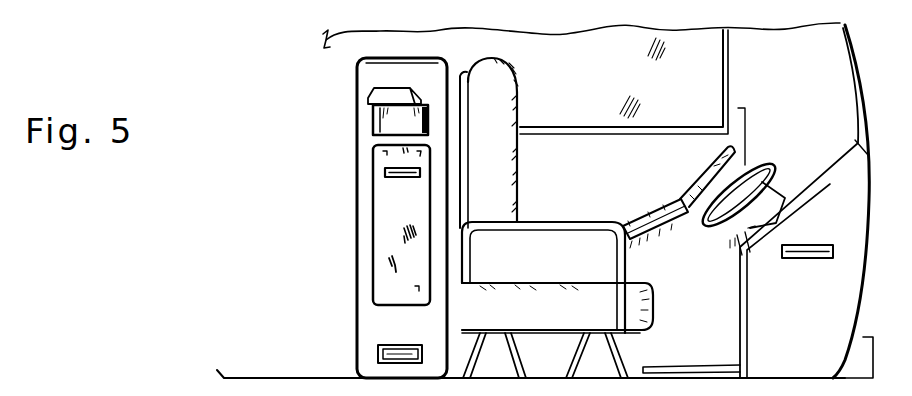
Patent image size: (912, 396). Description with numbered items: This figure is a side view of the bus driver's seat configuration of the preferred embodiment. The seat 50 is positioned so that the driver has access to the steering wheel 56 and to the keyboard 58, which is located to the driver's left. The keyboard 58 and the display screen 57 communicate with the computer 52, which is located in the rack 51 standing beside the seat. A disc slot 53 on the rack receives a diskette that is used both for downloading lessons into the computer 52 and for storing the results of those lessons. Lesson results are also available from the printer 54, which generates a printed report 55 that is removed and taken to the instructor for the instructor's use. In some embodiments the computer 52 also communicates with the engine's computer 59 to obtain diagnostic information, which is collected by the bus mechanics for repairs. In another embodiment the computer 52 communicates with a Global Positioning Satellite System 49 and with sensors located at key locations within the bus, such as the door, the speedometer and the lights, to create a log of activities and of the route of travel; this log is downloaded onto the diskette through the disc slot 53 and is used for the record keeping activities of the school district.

The Global Positioning Satellite System 49 is at (378, 353).
The seat 50 is at (533, 80).
The rack 51 is at (325, 296).
The computer 52 is at (390, 252).
The disc slot 53 is at (385, 172).
The printer 54 is at (365, 73).
The printed report 55 is at (367, 95).
The steering wheel 56 is at (777, 165).
The display screen 57 is at (690, 178).
The keyboard 58 is at (630, 208).
The engine's computer 59 is at (808, 262).